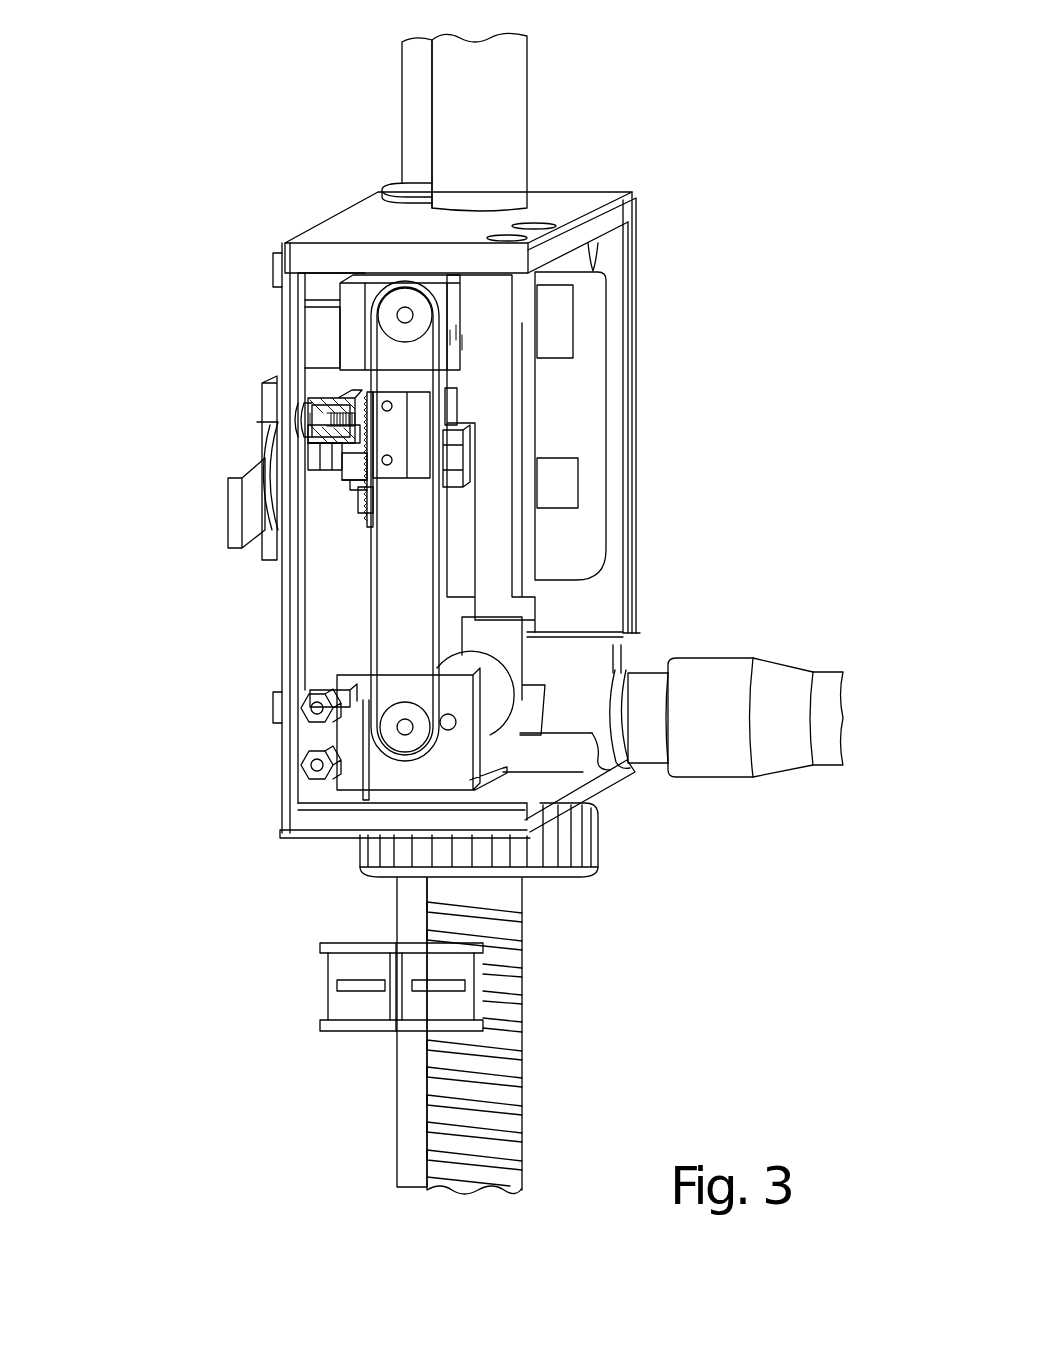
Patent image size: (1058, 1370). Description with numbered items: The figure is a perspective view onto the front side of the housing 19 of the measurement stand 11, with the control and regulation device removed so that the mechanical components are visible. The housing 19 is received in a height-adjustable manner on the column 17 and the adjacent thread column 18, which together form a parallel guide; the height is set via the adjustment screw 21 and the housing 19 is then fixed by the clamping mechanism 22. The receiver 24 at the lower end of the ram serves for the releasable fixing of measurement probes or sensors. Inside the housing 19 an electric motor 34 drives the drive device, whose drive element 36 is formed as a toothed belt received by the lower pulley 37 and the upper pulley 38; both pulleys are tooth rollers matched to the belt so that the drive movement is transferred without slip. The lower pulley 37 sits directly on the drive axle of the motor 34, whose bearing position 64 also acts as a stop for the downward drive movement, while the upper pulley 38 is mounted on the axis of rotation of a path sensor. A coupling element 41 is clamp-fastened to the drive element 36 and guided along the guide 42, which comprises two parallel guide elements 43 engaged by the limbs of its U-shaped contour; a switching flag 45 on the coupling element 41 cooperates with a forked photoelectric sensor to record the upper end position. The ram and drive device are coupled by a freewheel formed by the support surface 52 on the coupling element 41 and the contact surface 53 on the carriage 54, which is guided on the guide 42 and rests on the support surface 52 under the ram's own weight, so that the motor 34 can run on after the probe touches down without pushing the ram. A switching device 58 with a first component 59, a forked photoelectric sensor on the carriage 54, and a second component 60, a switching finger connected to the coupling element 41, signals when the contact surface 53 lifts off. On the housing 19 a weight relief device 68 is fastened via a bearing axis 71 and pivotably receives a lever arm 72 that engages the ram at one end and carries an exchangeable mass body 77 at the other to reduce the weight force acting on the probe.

The measurement stand 11 is at (646, 121).
The column 17 is at (407, 1088).
The thread column 18 is at (506, 1083).
The housing 19 is at (652, 602).
The adjustment screw 21 is at (585, 845).
The clamping mechanism 22 is at (780, 766).
The receiver 24 is at (340, 1015).
The electric motor 34 is at (466, 664).
The drive element 36 is at (433, 523).
The lower pulley 37 is at (385, 728).
The upper pulley 38 is at (395, 308).
The coupling element 41 is at (327, 479).
The guide 42 is at (354, 525).
The guide elements 43 is at (365, 792).
The switching flag 45 is at (455, 410).
The support surface 52 is at (322, 392).
The contact surface 53 is at (330, 415).
The carriage 54 is at (352, 398).
The switching device 58 is at (333, 478).
The first component 59 is at (334, 455).
The second component 60 is at (345, 472).
The bearing position 64 is at (393, 690).
The weight relief device 68 is at (205, 481).
The bearing axis 71 is at (272, 462).
The lever arm 72 is at (232, 492).
The mass body 77 is at (268, 417).